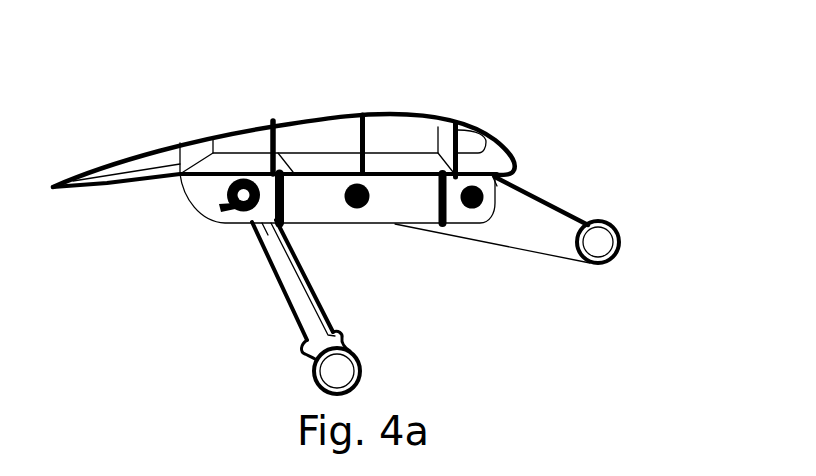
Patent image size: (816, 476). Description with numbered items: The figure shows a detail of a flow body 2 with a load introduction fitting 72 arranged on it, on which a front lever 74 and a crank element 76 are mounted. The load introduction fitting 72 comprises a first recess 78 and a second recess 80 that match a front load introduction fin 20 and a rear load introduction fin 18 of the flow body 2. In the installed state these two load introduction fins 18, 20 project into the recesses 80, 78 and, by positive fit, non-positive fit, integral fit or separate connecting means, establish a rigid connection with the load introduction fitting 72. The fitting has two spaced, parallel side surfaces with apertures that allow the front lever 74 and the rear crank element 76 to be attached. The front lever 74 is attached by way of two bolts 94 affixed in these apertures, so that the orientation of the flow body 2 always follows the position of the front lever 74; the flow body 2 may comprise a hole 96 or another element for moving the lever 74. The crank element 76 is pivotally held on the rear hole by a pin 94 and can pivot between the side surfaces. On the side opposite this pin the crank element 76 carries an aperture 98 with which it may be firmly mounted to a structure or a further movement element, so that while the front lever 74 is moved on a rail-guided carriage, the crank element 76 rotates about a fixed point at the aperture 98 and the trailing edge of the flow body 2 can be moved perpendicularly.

The flow body 2 is at (460, 99).
The rear load introduction fin 18 is at (275, 212).
The front load introduction fin 20 is at (444, 193).
The load introduction fitting 72 is at (358, 217).
The front lever 74 is at (553, 223).
The crank element 76 is at (302, 300).
The first recess 78 is at (448, 237).
The second recess 80 is at (288, 232).
The bolt 94 is at (352, 185).
The hole 96 is at (597, 243).
The aperture 98 is at (333, 369).